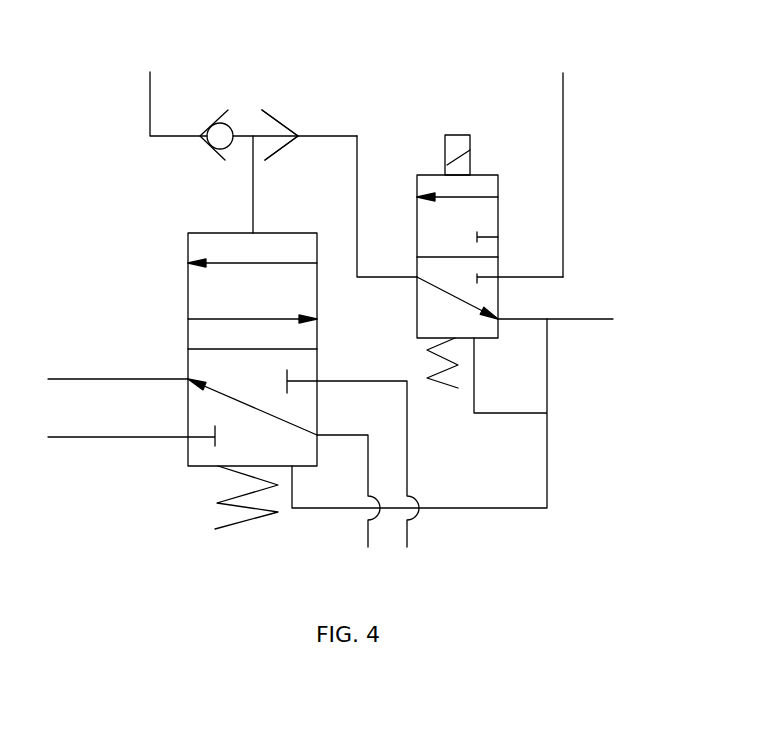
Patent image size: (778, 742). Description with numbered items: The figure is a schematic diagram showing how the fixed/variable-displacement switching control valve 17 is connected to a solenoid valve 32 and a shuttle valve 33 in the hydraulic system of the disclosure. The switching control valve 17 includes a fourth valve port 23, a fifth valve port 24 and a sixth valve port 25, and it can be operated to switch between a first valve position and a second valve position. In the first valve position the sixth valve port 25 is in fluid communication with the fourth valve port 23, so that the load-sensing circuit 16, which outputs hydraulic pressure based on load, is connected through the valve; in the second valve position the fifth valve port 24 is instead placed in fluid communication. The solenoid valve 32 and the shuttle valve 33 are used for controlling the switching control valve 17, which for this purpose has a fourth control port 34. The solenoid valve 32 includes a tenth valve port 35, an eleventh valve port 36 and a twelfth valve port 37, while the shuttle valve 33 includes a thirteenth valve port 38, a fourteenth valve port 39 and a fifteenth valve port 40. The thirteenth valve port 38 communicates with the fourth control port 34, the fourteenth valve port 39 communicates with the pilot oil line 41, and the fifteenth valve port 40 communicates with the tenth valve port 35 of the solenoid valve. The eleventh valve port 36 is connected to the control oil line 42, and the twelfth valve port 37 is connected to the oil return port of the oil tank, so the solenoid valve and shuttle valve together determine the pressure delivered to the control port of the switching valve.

The load-sensing circuit 16 is at (112, 378).
The fixed/variable-displacement switching control valve 17 is at (188, 305).
The fourth valve port 23 is at (317, 435).
The fifth valve port 24 is at (188, 440).
The sixth valve port 25 is at (188, 378).
The solenoid valve 32 is at (458, 135).
The shuttle valve 33 is at (268, 114).
The fourth control port 34 is at (253, 228).
The tenth valve port 35 is at (416, 277).
The eleventh valve port 36 is at (498, 277).
The twelfth valve port 37 is at (500, 319).
The thirteenth valve port 38 is at (265, 160).
The fourteenth valve port 39 is at (200, 135).
The fifteenth valve port 40 is at (298, 135).
The pilot oil line 41 is at (150, 103).
The control oil line 42 is at (563, 132).